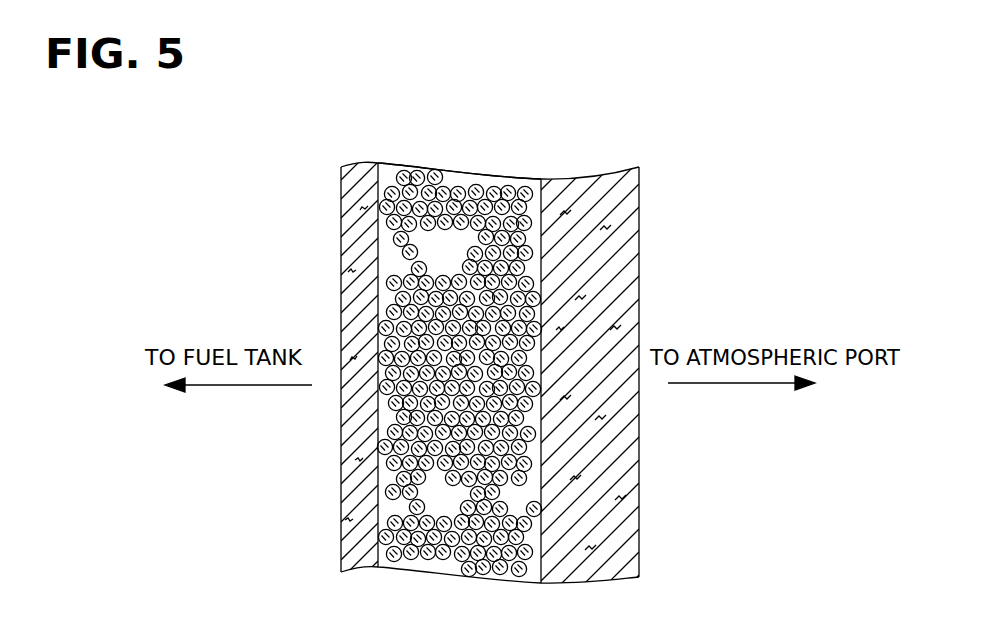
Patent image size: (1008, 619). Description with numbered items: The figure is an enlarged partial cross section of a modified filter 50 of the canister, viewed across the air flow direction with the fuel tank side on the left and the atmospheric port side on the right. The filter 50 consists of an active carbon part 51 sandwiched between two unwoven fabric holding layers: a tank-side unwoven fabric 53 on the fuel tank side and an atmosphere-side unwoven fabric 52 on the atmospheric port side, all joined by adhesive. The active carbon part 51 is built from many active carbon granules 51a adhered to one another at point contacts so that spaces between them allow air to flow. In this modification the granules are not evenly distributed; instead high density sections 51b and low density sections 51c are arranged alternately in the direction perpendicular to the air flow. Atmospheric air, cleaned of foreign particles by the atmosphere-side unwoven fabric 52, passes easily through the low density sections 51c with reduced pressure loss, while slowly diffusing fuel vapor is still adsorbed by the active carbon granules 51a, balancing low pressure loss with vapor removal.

The filter 50 is at (513, 86).
The active carbon part 51 is at (427, 163).
The active carbon granules 51a is at (500, 174).
The high density sections 51b is at (390, 216).
The low density sections 51c is at (392, 262).
The atmosphere-side unwoven fabric 52 is at (593, 167).
The tank-side unwoven fabric 53 is at (368, 163).